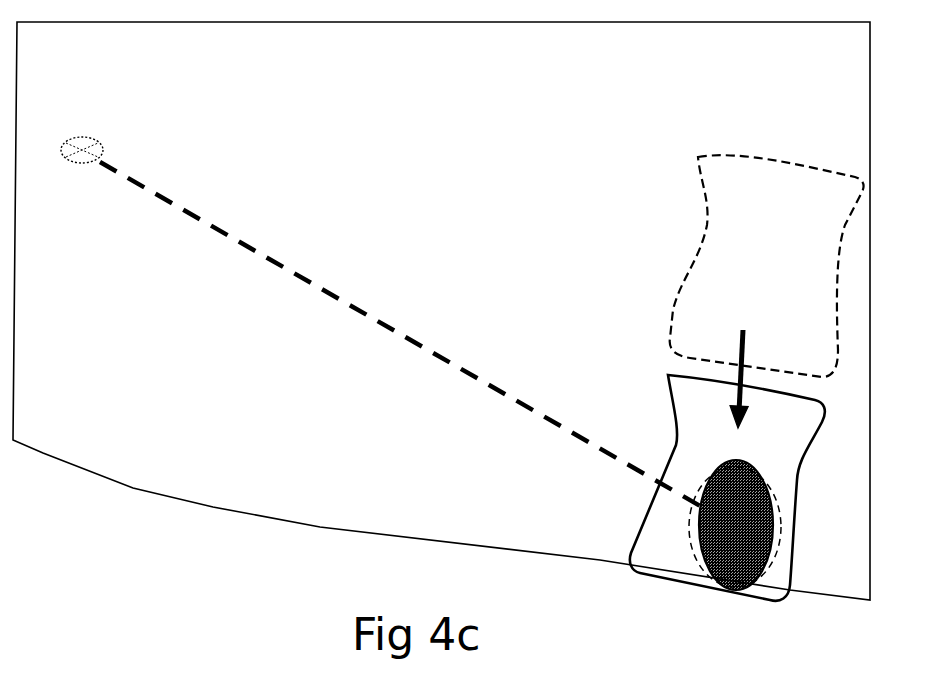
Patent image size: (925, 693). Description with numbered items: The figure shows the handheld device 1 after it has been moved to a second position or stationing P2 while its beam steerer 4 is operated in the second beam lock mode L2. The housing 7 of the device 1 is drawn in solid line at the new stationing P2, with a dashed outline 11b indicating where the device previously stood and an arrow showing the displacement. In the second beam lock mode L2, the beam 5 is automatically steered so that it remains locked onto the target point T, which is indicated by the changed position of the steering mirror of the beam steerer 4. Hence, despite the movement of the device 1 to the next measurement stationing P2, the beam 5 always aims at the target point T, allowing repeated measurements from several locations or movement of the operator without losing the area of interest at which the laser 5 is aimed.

The target point T is at (88, 159).
The beam 5 is at (532, 408).
The device 1 is at (692, 448).
The tool head in previous position 11b is at (740, 343).
The housing 7 is at (800, 473).
The beam steerer 4 is at (697, 537).
The second beam lock mode L2 is at (600, 524).
The second position P2 is at (760, 636).